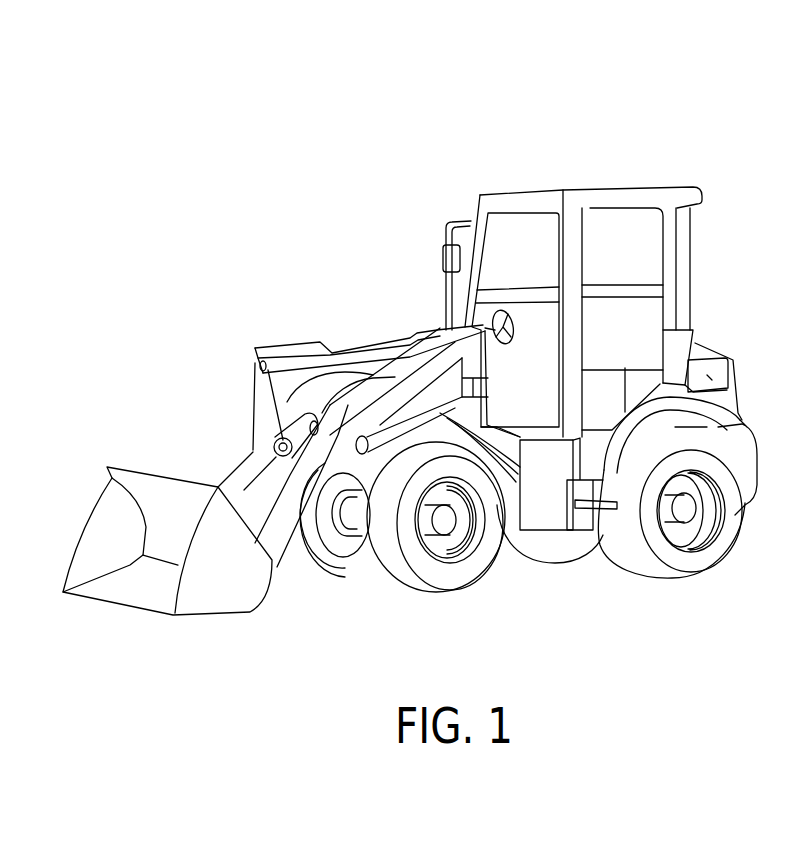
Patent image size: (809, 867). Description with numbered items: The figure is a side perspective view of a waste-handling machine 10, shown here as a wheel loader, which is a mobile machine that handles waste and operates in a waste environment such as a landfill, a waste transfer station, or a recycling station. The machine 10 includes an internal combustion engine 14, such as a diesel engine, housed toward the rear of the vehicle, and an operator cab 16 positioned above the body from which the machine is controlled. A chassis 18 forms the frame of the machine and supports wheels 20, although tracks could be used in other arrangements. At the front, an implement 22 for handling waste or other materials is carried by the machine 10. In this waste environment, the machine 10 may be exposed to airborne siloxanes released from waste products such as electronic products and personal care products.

The waste-handling machine 10 is at (418, 160).
The internal combustion engine 14 is at (714, 357).
The operator cab 16 is at (544, 200).
The chassis 18 is at (513, 512).
The wheels 20 is at (697, 562).
The implement 22 is at (207, 548).